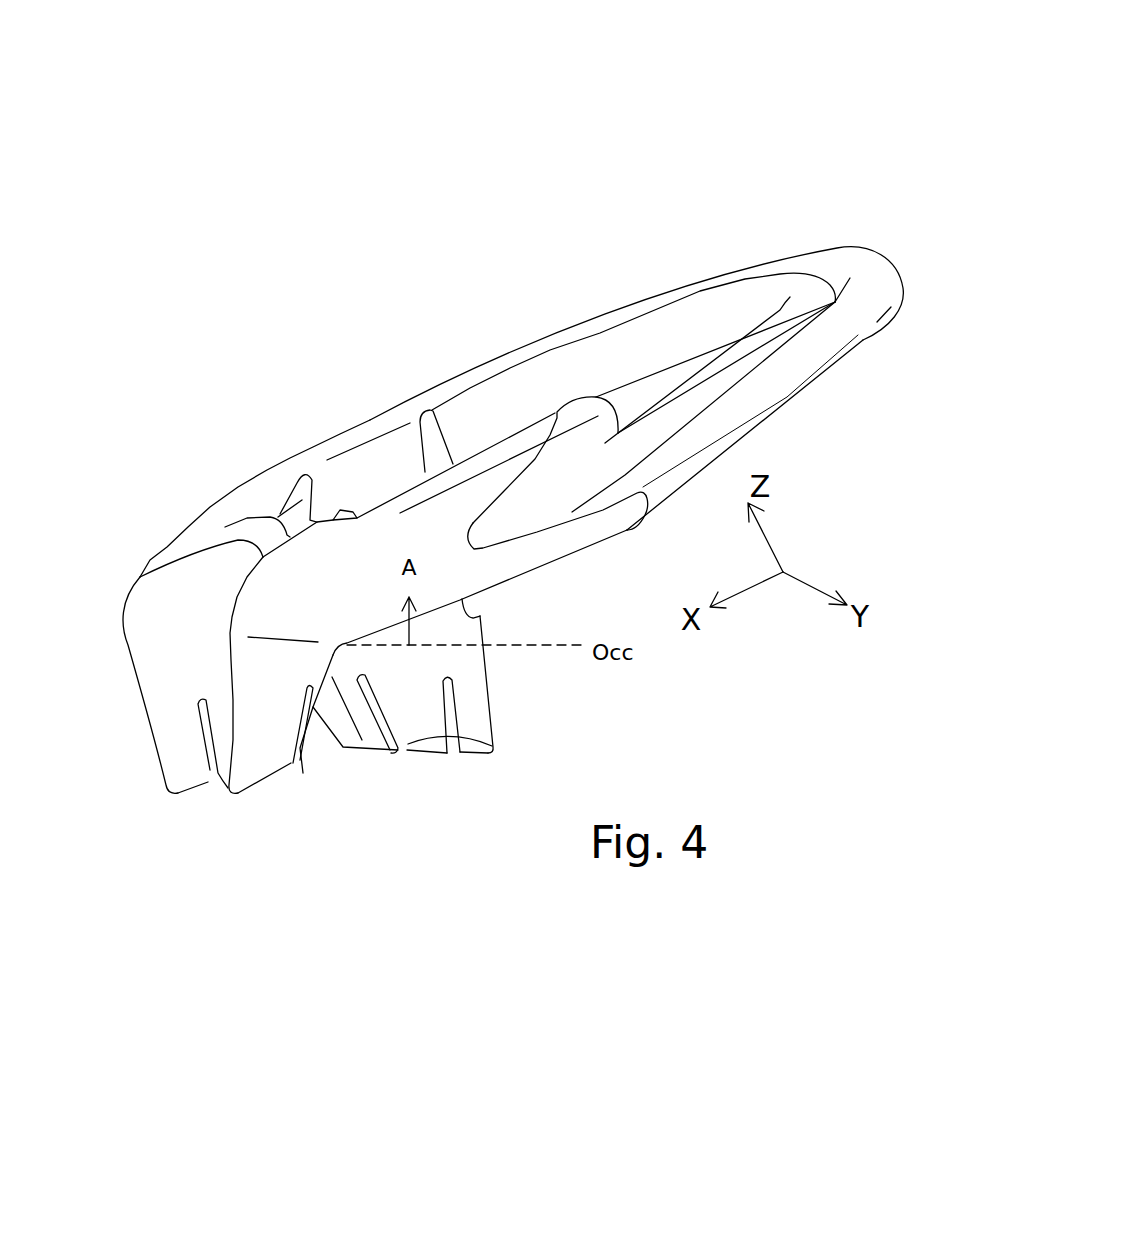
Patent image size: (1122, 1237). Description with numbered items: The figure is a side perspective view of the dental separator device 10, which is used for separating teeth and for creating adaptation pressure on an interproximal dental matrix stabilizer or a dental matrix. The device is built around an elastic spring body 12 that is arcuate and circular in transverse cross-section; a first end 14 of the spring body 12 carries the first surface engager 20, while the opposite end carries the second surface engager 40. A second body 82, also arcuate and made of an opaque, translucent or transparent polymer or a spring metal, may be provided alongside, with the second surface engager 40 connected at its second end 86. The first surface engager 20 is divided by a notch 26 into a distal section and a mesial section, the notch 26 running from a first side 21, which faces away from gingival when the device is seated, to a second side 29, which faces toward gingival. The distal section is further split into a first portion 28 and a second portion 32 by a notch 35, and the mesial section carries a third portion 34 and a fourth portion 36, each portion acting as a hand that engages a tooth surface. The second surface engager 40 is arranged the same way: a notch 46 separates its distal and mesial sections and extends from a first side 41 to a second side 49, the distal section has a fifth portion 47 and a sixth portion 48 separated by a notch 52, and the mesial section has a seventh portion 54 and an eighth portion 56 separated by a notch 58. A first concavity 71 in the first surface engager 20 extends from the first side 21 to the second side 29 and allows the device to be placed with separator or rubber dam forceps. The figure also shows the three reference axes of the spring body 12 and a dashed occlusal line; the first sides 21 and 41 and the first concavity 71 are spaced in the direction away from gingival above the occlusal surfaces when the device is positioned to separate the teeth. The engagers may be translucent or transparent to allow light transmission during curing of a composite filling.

The dental separator device 10 is at (670, 130).
The elastic spring body 12 is at (636, 379).
The first end 14 is at (440, 418).
The first surface engager 20 is at (270, 468).
The first side 21 is at (282, 498).
The notch 26 is at (245, 521).
The first portion 28 is at (163, 767).
The second side 29 is at (187, 793).
The second portion 32 is at (222, 703).
The third portion 34 is at (360, 737).
The notch 35 is at (217, 776).
The fourth portion 36 is at (405, 757).
The second surface engager 40 is at (457, 577).
The first side 41 is at (409, 496).
The notch 46 is at (343, 512).
The fifth portion 47 is at (291, 764).
The sixth portion 48 is at (303, 773).
The second side 49 is at (467, 753).
The notch 52 is at (293, 762).
The seventh portion 54 is at (427, 747).
The eighth portion 56 is at (493, 752).
The notch 58 is at (447, 753).
The first concavity 71 is at (383, 447).
The second body 82 is at (863, 340).
The second end 86 is at (487, 535).